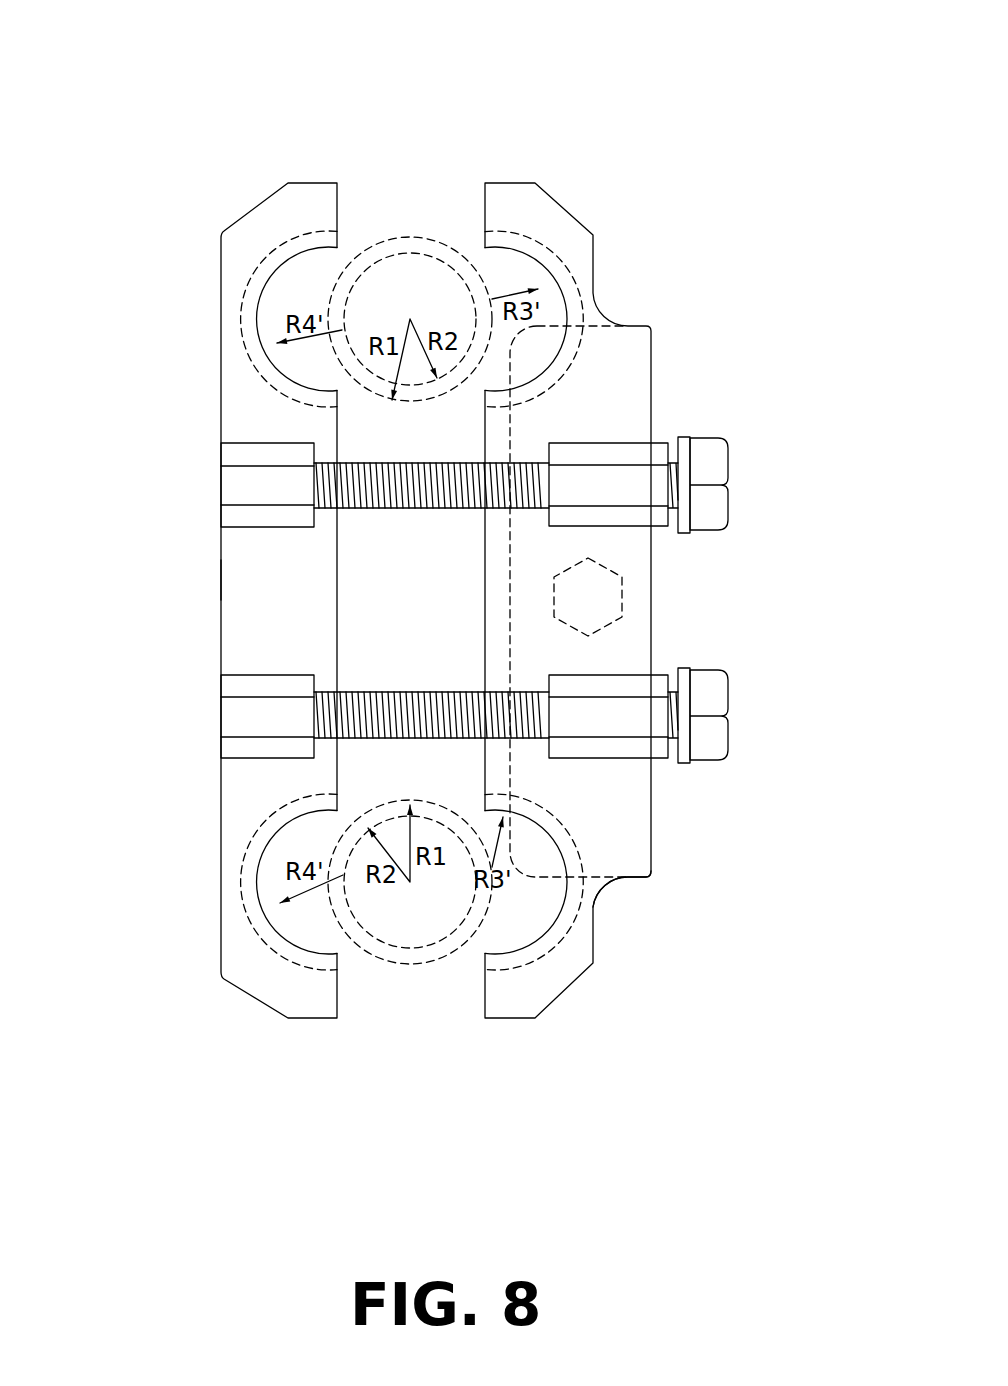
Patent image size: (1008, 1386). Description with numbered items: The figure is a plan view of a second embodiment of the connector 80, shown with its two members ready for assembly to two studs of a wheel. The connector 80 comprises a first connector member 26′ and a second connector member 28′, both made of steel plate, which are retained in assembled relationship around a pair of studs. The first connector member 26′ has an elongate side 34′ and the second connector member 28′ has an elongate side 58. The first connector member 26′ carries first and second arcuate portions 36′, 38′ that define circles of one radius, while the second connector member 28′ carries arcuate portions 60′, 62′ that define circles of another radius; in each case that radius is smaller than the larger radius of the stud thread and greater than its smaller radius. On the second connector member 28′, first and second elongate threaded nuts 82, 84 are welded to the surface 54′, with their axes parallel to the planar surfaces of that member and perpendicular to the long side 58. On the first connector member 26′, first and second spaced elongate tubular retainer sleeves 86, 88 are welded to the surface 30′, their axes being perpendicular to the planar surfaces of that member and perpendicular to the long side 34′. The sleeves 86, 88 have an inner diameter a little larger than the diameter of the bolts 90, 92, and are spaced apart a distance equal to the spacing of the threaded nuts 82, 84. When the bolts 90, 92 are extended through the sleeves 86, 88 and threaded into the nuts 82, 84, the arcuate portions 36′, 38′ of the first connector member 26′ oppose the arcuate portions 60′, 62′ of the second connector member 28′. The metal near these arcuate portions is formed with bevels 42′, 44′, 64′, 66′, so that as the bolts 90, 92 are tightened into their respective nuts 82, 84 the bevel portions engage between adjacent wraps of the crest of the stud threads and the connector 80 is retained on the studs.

The connector 80 is at (695, 128).
The second connector member 28′ is at (219, 776).
The surface of first connector member 30′ is at (612, 823).
The first connector member 26′ is at (660, 873).
The elongate side of second connector member 58 is at (335, 575).
The surface of second connector member 54′ is at (256, 561).
The elongate side of first connector member 34′ is at (483, 617).
The arcuate portion 60′ is at (317, 253).
The first arcuate portion 36′ is at (497, 253).
The arcuate portion 62′ is at (308, 940).
The second arcuate portion 38′ is at (515, 935).
The bevel 64′ is at (280, 270).
The bevel 42′ is at (538, 278).
The bevel 66′ is at (282, 937).
The bevel 44′ is at (530, 937).
The first elongate threaded nut 82 is at (256, 433).
The second elongate threaded nut 84 is at (276, 673).
The first tubular retainer sleeve 86 is at (615, 435).
The second tubular retainer sleeve 88 is at (597, 758).
The bolt 90 is at (735, 463).
The bolt 92 is at (740, 725).